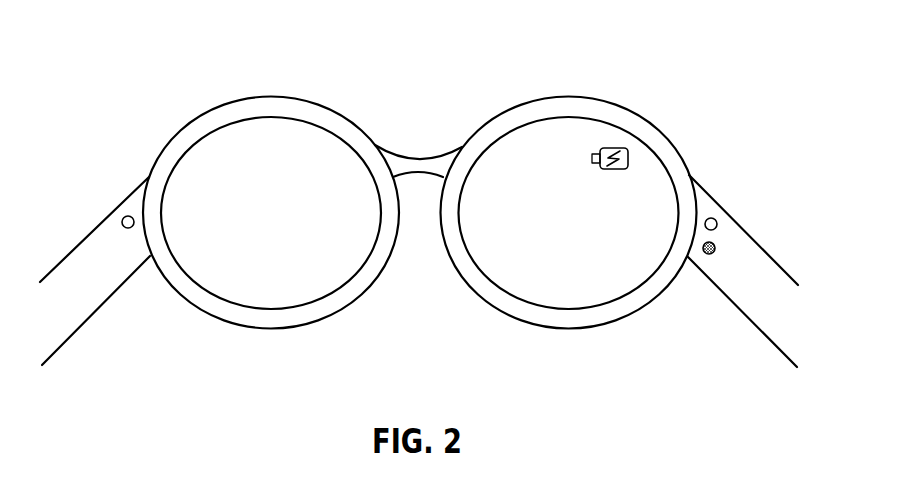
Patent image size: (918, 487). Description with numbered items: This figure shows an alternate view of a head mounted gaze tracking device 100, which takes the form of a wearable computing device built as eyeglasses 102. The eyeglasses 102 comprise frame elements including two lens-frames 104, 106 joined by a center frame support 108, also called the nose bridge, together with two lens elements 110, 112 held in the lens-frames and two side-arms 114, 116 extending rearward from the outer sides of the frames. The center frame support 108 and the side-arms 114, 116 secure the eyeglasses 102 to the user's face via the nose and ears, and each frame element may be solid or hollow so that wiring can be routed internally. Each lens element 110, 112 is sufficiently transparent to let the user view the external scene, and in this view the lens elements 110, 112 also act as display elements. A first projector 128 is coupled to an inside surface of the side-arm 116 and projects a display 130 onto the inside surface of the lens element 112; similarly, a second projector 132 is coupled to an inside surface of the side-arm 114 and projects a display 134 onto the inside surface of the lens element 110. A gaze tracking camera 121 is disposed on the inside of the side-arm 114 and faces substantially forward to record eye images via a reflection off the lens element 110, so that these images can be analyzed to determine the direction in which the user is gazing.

The head mounted gaze tracking device 100 is at (626, 387).
The eyeglasses 102 is at (161, 70).
The lens-frame 104 is at (643, 293).
The lens-frame 106 is at (195, 297).
The center frame support 108 is at (408, 160).
The lens element 110 is at (518, 272).
The lens element 112 is at (297, 273).
The side-arm 114 is at (788, 273).
The side-arm 116 is at (97, 225).
The gaze tracking camera 121 is at (716, 246).
The first projector 128 is at (126, 215).
The display 130 is at (253, 165).
The second projector 132 is at (714, 218).
The display 134 is at (605, 178).